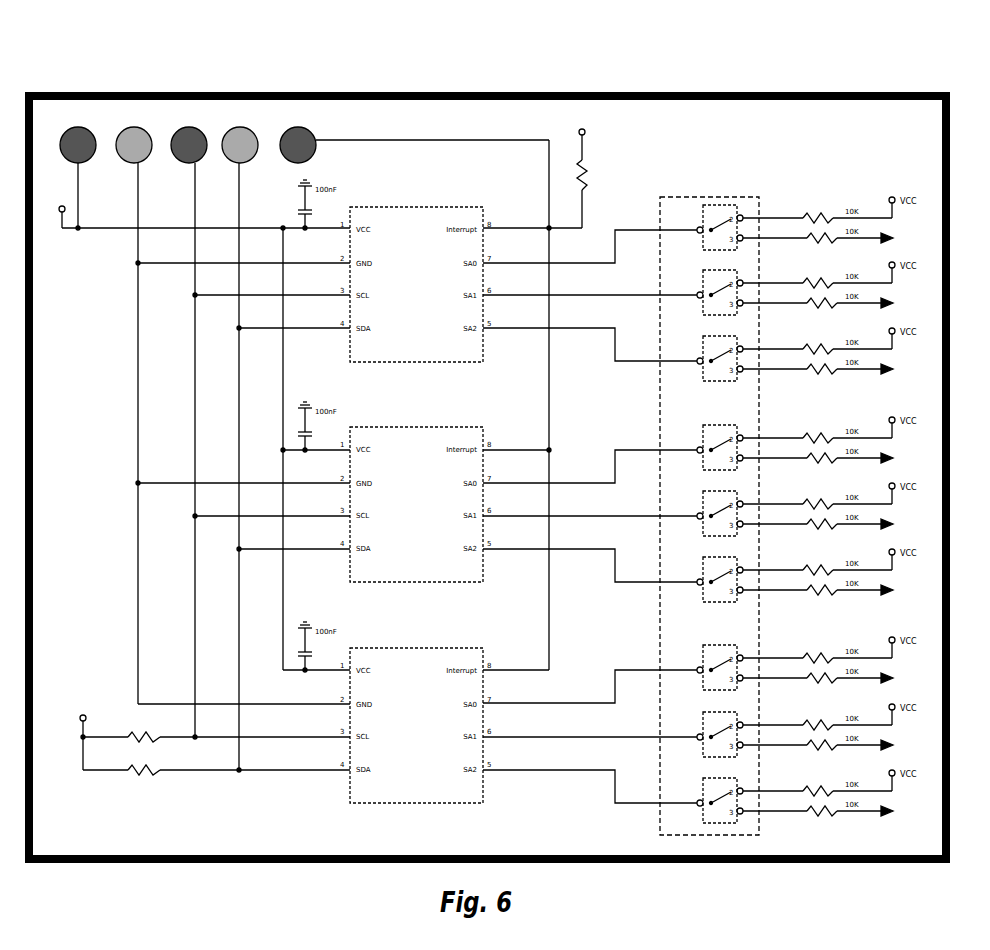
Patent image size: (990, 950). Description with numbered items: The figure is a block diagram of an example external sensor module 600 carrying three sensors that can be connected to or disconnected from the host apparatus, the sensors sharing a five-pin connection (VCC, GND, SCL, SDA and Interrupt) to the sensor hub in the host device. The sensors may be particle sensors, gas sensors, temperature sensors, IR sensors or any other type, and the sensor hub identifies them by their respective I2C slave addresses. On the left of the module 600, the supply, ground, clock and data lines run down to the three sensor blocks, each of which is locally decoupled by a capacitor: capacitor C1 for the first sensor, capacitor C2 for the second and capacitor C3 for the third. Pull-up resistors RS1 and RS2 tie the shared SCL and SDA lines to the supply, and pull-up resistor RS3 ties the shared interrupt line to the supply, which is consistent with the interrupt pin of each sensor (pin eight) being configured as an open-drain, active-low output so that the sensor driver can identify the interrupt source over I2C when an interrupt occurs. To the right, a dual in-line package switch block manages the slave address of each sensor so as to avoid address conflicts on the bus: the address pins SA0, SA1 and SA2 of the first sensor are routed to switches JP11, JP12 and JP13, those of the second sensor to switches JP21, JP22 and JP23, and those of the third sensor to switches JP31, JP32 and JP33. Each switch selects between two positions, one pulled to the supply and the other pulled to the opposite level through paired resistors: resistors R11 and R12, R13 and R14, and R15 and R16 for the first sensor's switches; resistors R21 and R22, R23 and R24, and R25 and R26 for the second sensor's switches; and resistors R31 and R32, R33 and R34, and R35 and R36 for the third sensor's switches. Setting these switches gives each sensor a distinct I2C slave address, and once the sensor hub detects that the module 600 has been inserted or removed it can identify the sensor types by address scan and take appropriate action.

The external sensor module 600 is at (502, 449).
The decoupling capacitor C1 is at (317, 204).
The decoupling capacitor C2 is at (317, 426).
The decoupling capacitor C3 is at (317, 646).
The SCL pull-up resistor RS1 is at (130, 734).
The SDA pull-up resistor RS2 is at (130, 767).
The interrupt pull-up resistor RS3 is at (591, 175).
The DIP switch JP11 is at (701, 227).
The DIP switch JP12 is at (701, 292).
The DIP switch JP13 is at (701, 358).
The DIP switch JP21 is at (701, 447).
The DIP switch JP22 is at (701, 513).
The DIP switch JP23 is at (701, 579).
The DIP switch JP31 is at (701, 667).
The DIP switch JP32 is at (701, 734).
The DIP switch JP33 is at (701, 800).
The resistor R11 is at (809, 215).
The resistor R12 is at (811, 235).
The resistor R13 is at (809, 280).
The resistor R14 is at (811, 300).
The resistor R15 is at (809, 346).
The resistor R16 is at (811, 366).
The resistor R21 is at (809, 435).
The resistor R22 is at (811, 455).
The resistor R23 is at (809, 501).
The resistor R24 is at (811, 521).
The resistor R25 is at (809, 567).
The resistor R26 is at (811, 587).
The resistor R31 is at (809, 655).
The resistor R32 is at (811, 675).
The resistor R33 is at (809, 722).
The resistor R34 is at (811, 742).
The resistor R35 is at (809, 788).
The resistor R36 is at (811, 808).